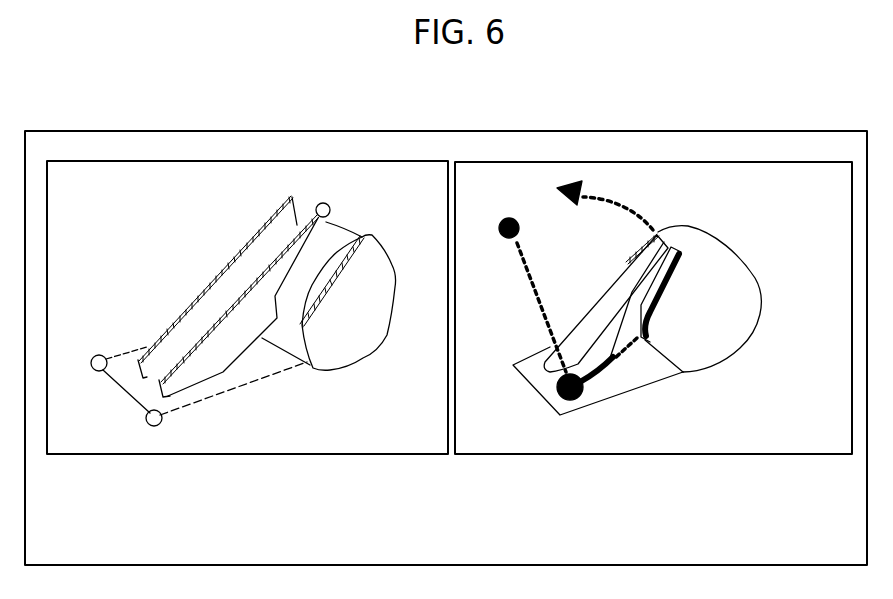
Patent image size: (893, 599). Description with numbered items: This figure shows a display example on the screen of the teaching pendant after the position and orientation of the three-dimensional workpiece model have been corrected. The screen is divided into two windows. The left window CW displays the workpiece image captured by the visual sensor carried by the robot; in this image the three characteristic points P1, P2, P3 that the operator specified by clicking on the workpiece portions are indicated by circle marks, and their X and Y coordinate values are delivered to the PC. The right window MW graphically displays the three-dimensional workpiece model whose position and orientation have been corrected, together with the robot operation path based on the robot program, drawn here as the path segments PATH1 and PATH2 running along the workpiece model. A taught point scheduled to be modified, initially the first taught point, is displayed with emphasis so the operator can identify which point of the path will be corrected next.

The left window CW is at (216, 161).
The right window MW is at (631, 162).
The characteristic point P1 is at (160, 424).
The characteristic point P2 is at (329, 205).
The characteristic point P3 is at (96, 355).
The first tool path PATH1 is at (585, 394).
The second tool path PATH2 is at (650, 341).